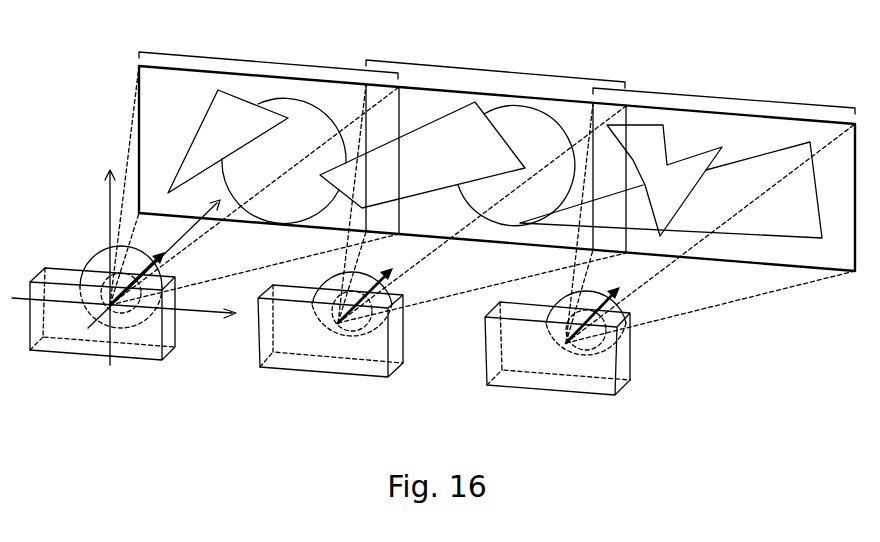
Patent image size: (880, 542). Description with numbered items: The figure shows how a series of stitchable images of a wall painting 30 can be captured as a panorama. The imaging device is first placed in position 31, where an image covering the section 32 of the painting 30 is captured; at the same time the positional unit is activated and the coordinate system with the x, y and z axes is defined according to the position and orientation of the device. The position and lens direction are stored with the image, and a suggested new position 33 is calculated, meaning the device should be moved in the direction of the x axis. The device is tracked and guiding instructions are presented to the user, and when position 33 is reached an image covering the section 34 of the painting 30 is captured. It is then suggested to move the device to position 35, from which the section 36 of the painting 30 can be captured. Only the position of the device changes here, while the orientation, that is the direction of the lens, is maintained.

The wall painting 30 is at (138, 120).
The position 31 is at (65, 353).
The section 32 is at (242, 58).
The suggested new position 33 is at (315, 370).
The section 34 is at (473, 68).
The position 35 is at (545, 388).
The section 36 is at (643, 90).